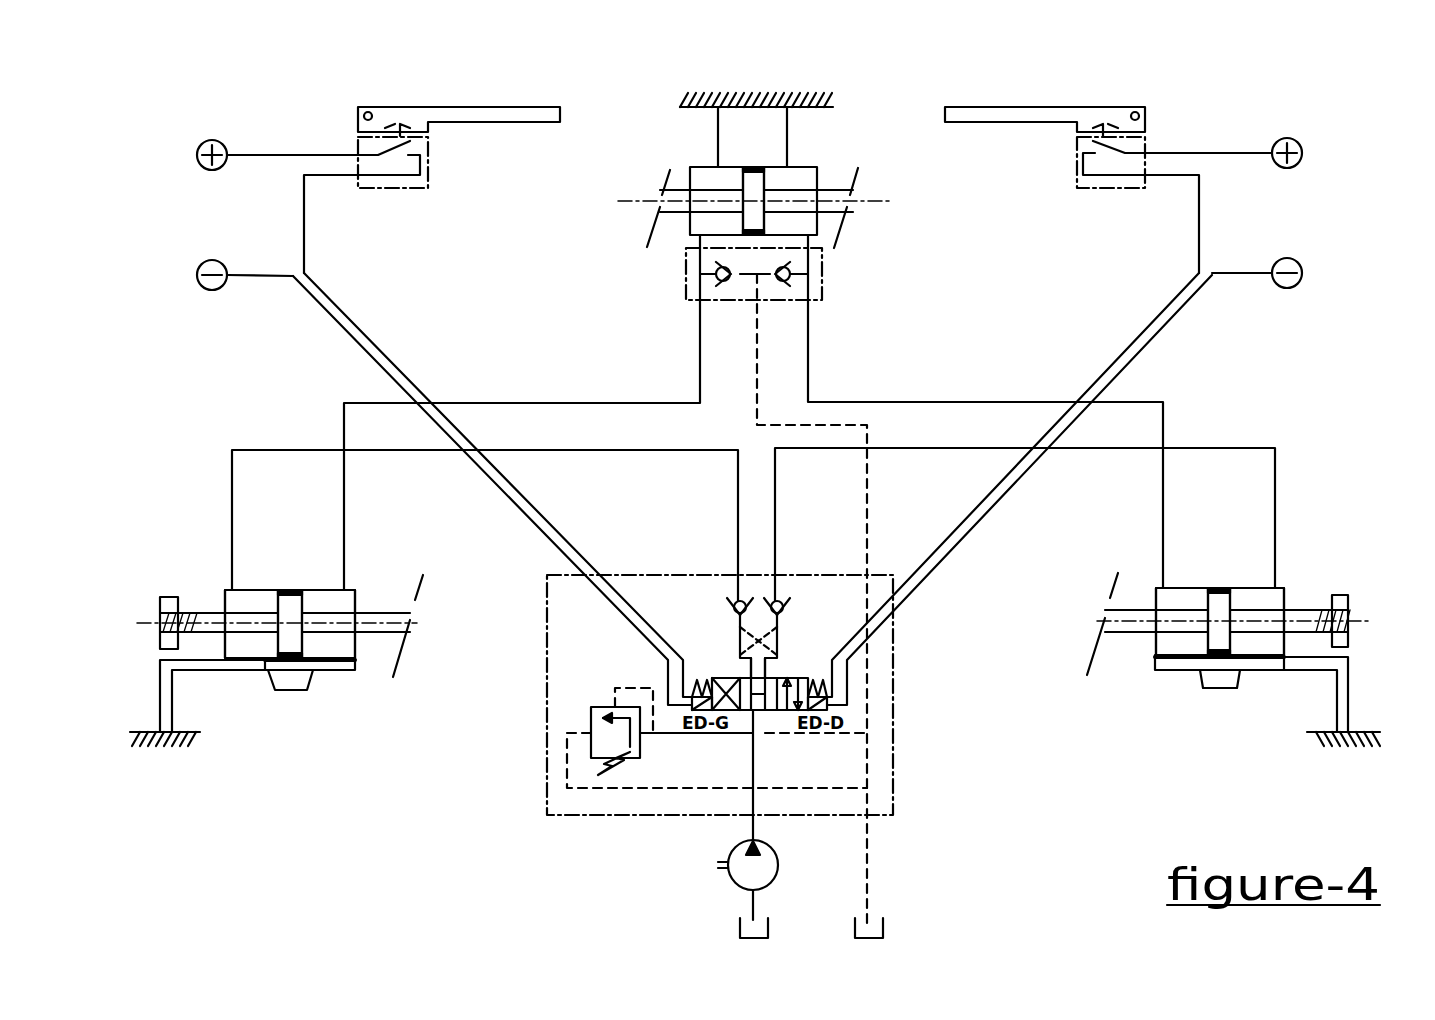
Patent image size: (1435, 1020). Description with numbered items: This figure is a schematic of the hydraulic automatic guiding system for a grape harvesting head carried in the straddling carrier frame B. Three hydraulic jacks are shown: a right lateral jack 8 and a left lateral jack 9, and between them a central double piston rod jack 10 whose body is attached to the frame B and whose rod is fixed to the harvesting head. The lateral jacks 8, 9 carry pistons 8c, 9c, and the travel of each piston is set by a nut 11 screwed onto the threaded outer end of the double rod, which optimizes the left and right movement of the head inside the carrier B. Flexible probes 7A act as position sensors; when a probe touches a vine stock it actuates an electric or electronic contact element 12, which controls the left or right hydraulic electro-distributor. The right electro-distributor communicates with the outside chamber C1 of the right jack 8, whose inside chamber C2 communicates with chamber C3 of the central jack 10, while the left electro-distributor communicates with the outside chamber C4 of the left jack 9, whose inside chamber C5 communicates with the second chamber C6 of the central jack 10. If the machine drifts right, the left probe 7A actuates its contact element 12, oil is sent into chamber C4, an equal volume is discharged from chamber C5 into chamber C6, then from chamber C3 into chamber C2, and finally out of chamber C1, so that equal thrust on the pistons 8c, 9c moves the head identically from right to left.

The straddling carrier frame B is at (772, 152).
The second chamber of central jack C6 is at (712, 180).
The chamber of central jack C3 is at (802, 183).
The double piston rod jack 10 is at (677, 237).
The flexible probe 7A is at (497, 115).
The electric or electronic contact element 12 is at (393, 167).
The left lateral hydraulic jack 9 is at (215, 583).
The piston of left jack 9c is at (292, 607).
The outside chamber of left jack C4 is at (250, 643).
The inside chamber of left jack C5 is at (328, 645).
The nut 11 is at (168, 605).
The right lateral hydraulic jack 8 is at (1293, 595).
The piston of right jack 8c is at (1218, 603).
The inside chamber of right jack C2 is at (1180, 643).
The outside chamber of right jack C1 is at (1257, 643).